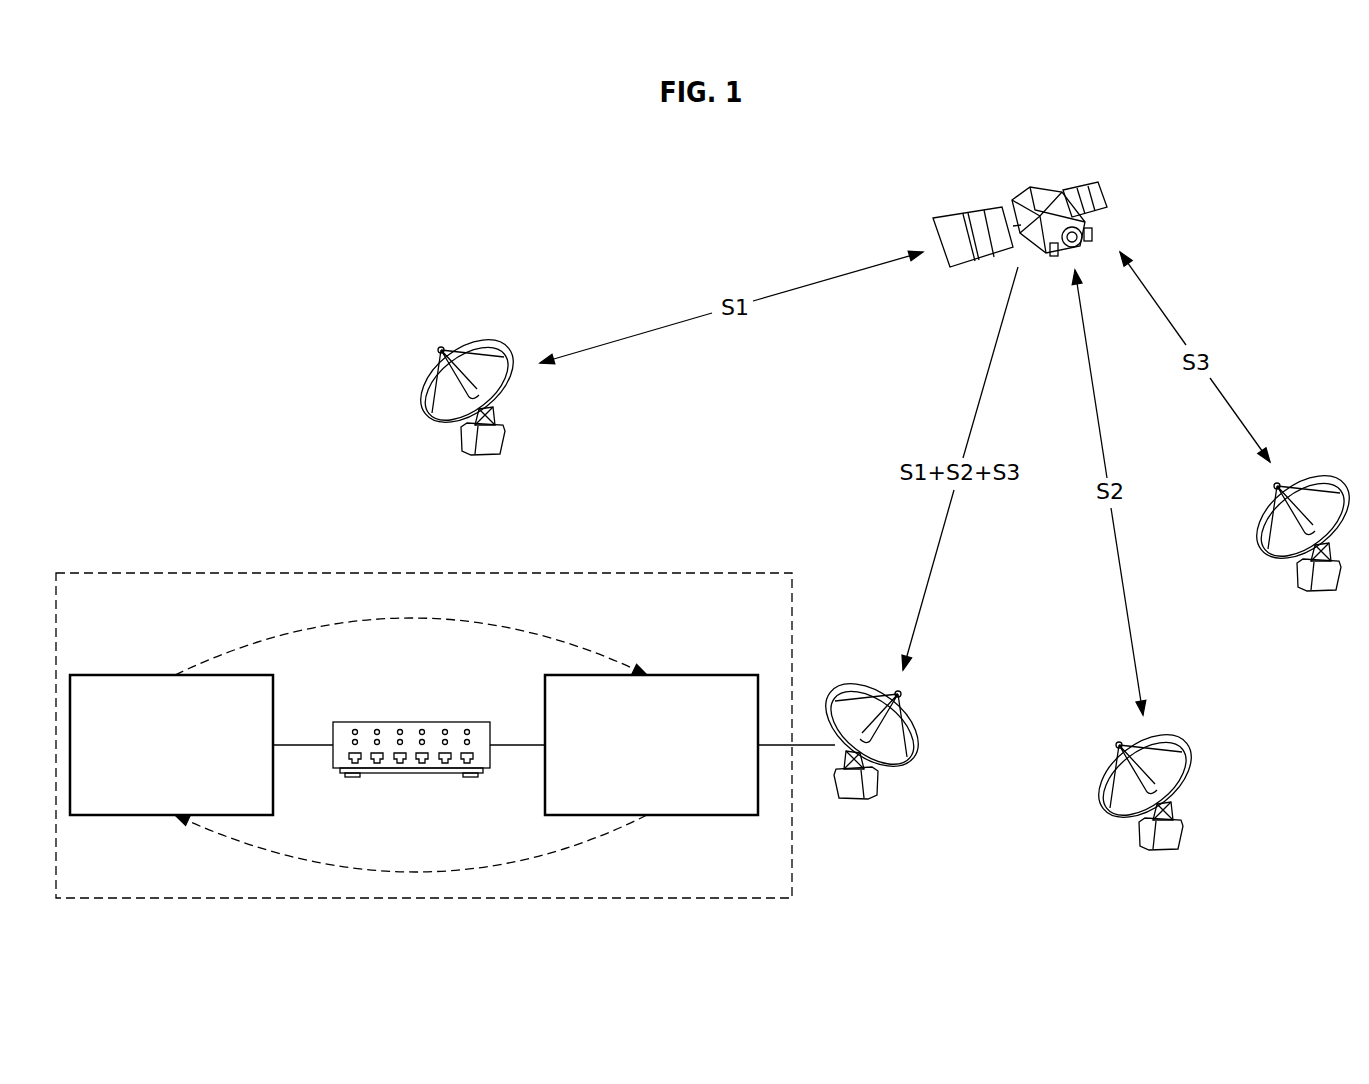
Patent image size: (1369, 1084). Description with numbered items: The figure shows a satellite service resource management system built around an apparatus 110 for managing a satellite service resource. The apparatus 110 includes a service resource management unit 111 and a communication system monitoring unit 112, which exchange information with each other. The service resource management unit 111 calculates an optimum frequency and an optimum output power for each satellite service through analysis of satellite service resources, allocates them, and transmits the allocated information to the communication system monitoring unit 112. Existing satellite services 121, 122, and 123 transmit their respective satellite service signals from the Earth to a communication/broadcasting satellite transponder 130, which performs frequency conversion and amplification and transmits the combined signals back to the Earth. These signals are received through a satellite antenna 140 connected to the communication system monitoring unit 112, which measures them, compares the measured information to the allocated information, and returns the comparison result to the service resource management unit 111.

The apparatus for managing a satellite service resource 110 is at (423, 573).
The service resource management unit 111 is at (128, 675).
The communication system monitoring unit 112 is at (693, 675).
The satellite service 121 is at (497, 345).
The satellite service 122 is at (1172, 738).
The satellite service 123 is at (1328, 476).
The communication/broadcasting satellite transponder 130 is at (1107, 195).
The satellite antenna 140 is at (843, 683).